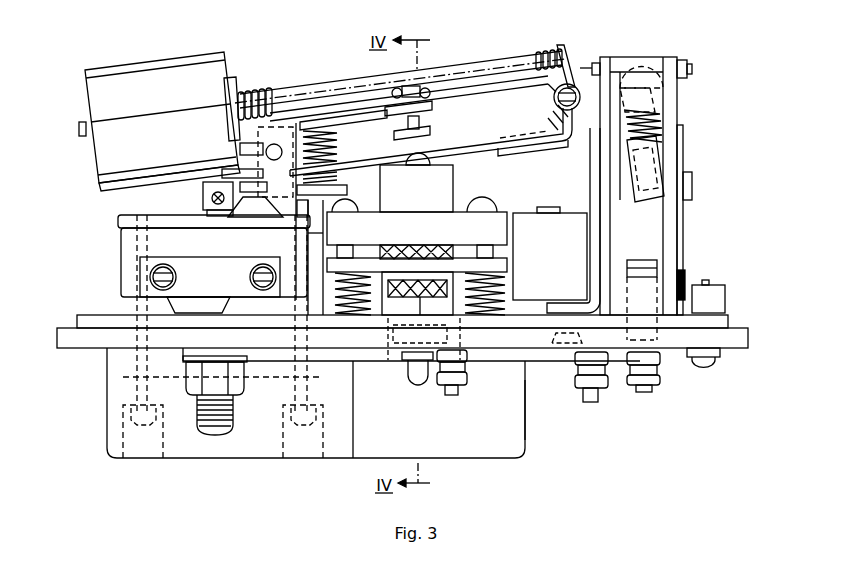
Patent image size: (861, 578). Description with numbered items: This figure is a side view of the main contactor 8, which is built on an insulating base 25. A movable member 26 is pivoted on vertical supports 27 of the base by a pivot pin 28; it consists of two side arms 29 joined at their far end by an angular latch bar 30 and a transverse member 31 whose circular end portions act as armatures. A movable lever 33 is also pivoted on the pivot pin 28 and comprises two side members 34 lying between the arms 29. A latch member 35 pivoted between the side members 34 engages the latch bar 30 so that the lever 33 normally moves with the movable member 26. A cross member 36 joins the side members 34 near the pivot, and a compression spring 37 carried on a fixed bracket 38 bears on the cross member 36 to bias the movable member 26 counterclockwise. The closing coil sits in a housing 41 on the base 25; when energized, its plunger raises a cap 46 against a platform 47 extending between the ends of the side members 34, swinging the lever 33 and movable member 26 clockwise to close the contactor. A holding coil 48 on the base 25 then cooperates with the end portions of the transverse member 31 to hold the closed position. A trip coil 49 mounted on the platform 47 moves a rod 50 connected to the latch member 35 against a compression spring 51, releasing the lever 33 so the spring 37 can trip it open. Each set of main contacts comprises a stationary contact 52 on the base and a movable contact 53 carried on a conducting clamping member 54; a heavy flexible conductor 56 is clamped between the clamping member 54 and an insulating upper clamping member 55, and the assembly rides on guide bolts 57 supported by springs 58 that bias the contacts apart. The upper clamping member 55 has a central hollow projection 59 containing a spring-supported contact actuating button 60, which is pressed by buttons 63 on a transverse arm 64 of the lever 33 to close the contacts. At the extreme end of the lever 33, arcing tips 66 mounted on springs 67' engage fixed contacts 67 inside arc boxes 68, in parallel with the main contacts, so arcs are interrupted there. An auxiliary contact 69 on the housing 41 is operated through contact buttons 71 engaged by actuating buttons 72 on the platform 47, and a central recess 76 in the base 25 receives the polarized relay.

The main contactor 8 is at (542, 431).
The insulating base 25 is at (63, 331).
The movable member 26 is at (458, 143).
The vertical supports 27 is at (296, 196).
The pivot pin 28 is at (276, 161).
The side arms 29 is at (473, 118).
The angular latch bar 30 is at (552, 121).
The transverse member 31 is at (532, 151).
The movable lever 33 is at (596, 64).
The side members 34 is at (583, 124).
The latch member 35 is at (570, 51).
The cross member 36 is at (340, 121).
The compression spring 37 is at (340, 177).
The fixed bracket 38 is at (347, 191).
The housing 41 is at (121, 296).
The cap 46 is at (203, 199).
The platform 47 is at (153, 188).
The holding coil 48 is at (570, 215).
The trip coil 49 is at (149, 58).
The rod 50 is at (355, 89).
The compression spring 51 is at (263, 93).
The stationary contact 52 is at (387, 318).
The movable contact 53 is at (458, 318).
The conducting clamping member 54 is at (507, 266).
The upper clamping member 55 is at (500, 234).
The flexible conductor 56 is at (438, 248).
The guide bolts 57 is at (486, 198).
The springs 58 is at (507, 293).
The central hollow projection 59 is at (453, 187).
The contact actuating button 60 is at (405, 156).
The buttons 63 is at (430, 131).
The transverse arm 64 is at (431, 104).
The arcing tips 66 is at (660, 175).
The fixed contacts 67 is at (641, 289).
The springs 67' is at (663, 115).
The arc boxes 68 is at (652, 57).
The auxiliary contact 69 is at (121, 247).
The contact buttons 71 is at (265, 193).
The actuating buttons 72 is at (246, 200).
The central recess 76 is at (522, 394).